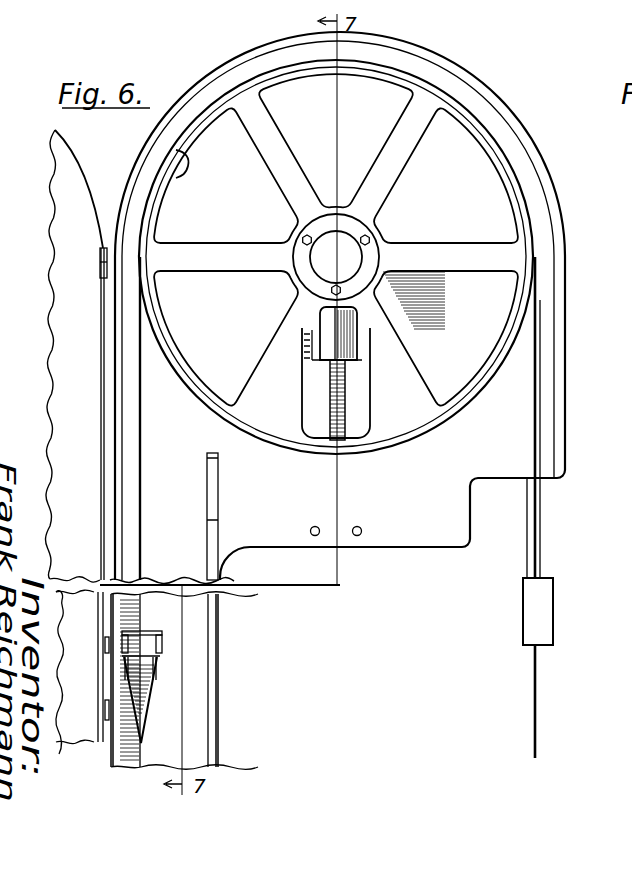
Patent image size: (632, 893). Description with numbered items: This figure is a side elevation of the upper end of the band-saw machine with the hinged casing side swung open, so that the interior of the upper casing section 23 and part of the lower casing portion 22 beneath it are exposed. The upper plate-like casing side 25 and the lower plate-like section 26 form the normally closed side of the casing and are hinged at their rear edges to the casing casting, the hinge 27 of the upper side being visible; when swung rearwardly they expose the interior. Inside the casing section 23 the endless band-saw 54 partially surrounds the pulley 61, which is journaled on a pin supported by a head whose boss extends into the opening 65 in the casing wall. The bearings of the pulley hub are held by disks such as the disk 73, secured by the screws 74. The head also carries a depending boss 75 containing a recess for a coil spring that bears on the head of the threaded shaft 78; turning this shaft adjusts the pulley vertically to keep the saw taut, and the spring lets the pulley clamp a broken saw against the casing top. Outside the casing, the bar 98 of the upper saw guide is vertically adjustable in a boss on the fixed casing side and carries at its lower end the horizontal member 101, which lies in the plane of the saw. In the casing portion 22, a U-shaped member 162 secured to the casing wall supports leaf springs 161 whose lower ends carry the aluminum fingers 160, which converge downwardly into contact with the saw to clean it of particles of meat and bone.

The casing portion 22 is at (222, 745).
The upper casing section 23 is at (558, 437).
The upper plate-like casing side 25 is at (68, 372).
The lower plate-like section 26 is at (98, 678).
The hinge 27 is at (100, 250).
The band-saw 54 is at (545, 378).
The pulley 61 is at (507, 183).
The opening 65 is at (357, 385).
The disk 73 is at (368, 258).
The screws 74 is at (371, 238).
The depending boss 75 is at (343, 347).
The threaded shaft 78 is at (343, 407).
The bar 98 is at (543, 530).
The member 101 is at (545, 607).
The fingers 160 is at (160, 707).
The leaf springs 161 is at (160, 660).
The U-shaped member 162 is at (147, 635).